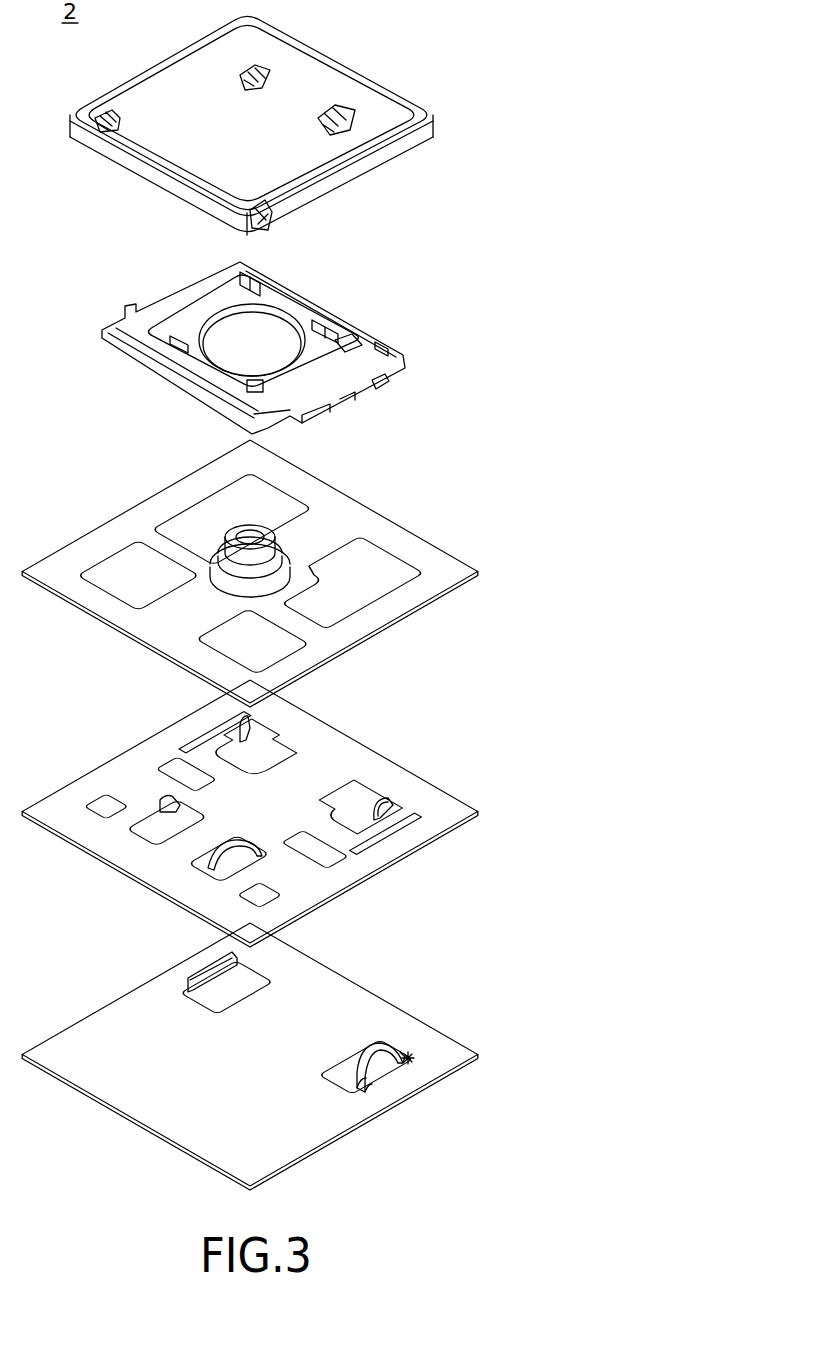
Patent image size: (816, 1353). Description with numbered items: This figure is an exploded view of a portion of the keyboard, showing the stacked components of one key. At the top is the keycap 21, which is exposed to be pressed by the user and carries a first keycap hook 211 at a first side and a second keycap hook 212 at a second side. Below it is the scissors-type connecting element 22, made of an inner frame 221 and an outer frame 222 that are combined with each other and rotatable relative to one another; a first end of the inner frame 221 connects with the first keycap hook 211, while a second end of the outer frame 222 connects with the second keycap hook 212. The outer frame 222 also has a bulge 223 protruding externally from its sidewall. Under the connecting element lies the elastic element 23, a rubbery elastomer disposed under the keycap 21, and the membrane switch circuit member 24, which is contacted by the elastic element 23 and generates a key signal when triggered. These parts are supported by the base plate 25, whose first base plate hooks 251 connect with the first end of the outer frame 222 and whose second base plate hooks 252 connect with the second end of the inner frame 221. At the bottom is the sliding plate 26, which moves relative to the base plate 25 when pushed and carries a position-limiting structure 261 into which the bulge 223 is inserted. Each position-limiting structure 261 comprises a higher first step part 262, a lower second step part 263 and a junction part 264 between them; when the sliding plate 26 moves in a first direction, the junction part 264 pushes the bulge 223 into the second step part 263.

The keycap 21 is at (332, 77).
The first keycap hook 211 is at (357, 120).
The second keycap hook 212 is at (110, 117).
The scissors-type connecting element 22 is at (453, 263).
The inner frame 221 is at (312, 350).
The outer frame 222 is at (360, 360).
The bulge 223 is at (387, 380).
The elastic element 23 is at (277, 557).
The membrane switch circuit member 24 is at (405, 545).
The base plate 25 is at (340, 750).
The first base plate hook 251 is at (382, 802).
The second base plate hook 252 is at (202, 875).
The sliding plate 26 is at (323, 975).
The position-limiting structure 261 is at (412, 1063).
The first step part 262 is at (377, 1062).
The second step part 263 is at (392, 1050).
The junction part 264 is at (380, 1073).